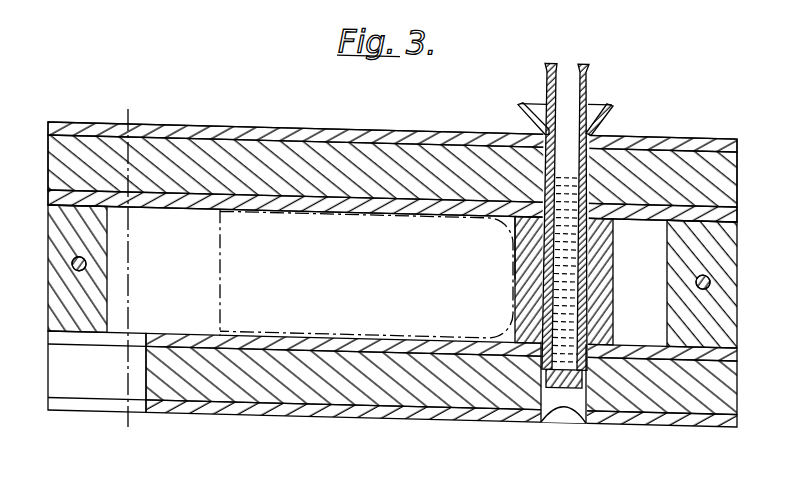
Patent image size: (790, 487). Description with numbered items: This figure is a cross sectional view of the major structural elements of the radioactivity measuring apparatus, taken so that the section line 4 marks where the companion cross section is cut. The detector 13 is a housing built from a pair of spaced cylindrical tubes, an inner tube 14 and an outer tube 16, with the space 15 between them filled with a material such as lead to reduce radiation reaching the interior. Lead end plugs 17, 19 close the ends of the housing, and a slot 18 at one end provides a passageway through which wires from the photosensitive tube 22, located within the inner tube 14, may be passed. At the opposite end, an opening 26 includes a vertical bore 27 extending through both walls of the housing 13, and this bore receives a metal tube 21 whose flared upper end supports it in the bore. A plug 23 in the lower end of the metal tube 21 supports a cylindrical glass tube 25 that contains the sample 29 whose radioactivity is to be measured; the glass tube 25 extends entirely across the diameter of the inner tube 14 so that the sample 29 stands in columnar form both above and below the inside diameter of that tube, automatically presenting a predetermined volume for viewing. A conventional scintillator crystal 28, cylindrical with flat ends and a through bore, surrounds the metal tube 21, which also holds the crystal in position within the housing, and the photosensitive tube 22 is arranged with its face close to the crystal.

The section line 4- 4 is at (153, 107).
The detector 13 is at (271, 122).
The inner tube 14 is at (48, 197).
The space 15 is at (48, 155).
The outer tube 16 is at (48, 127).
The end plug 17 is at (48, 258).
The slot 18 is at (50, 372).
The end plug 19 is at (715, 246).
The metal tube 21 is at (521, 95).
The photosensitive tube 22 is at (292, 279).
The plug 23 is at (558, 356).
The cylindrical glass tube 25 is at (588, 66).
The opening 26 is at (604, 108).
The vertical bore 27 is at (570, 386).
The scintillator crystal 28 is at (516, 285).
The sample 29 is at (515, 237).